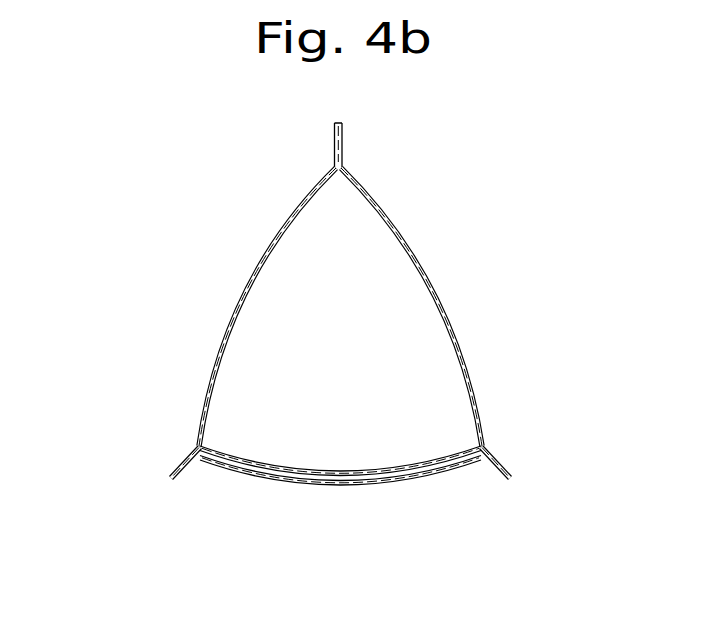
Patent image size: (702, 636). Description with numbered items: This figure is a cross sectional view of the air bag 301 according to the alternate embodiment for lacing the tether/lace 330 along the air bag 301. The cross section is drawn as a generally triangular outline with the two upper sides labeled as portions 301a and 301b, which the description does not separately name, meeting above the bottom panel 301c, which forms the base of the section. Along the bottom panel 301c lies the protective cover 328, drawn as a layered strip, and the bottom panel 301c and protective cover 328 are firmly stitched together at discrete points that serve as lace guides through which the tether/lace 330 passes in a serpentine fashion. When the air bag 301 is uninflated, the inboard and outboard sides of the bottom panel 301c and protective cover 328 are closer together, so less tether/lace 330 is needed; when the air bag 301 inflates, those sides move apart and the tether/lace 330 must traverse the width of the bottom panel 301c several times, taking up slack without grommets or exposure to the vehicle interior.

The air bag 301 is at (317, 343).
The first side member 301a is at (428, 263).
The second side member 301b is at (253, 264).
The bottom panel 301c is at (337, 471).
The protective cover 328 is at (338, 488).
The tether/lace 330 is at (455, 466).